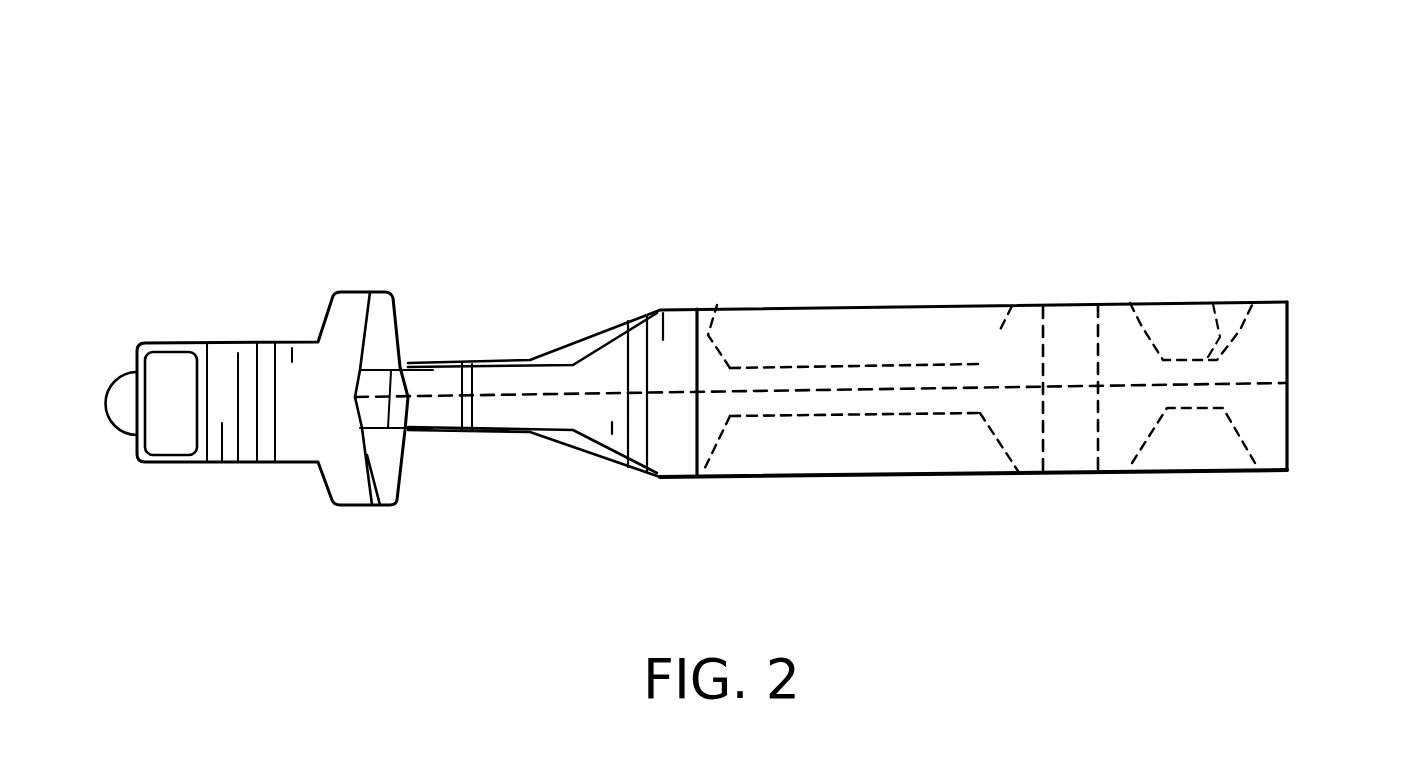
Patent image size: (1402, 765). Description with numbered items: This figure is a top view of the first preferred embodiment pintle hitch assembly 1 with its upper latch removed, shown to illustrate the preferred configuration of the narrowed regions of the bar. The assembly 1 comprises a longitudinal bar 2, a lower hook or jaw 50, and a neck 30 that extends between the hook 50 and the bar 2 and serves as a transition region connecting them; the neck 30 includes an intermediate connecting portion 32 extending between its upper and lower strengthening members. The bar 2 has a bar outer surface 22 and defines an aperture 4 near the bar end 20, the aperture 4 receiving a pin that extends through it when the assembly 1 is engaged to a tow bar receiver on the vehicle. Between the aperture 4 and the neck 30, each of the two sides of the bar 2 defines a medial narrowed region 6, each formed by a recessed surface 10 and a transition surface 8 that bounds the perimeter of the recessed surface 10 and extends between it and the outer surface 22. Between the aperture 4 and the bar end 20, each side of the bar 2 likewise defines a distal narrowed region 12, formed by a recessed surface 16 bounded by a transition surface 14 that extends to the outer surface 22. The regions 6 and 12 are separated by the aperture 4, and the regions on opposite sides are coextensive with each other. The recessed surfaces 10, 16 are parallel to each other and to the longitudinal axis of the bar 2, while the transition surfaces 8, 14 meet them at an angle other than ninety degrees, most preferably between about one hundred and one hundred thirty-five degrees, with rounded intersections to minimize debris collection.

The pintle hitch assembly 1 is at (1191, 126).
The longitudinal bar 2 is at (876, 336).
The aperture 4 is at (1090, 365).
The medial narrowed region 6 is at (860, 390).
The transition surface 8 is at (717, 305).
The recessed surface 10 is at (863, 367).
The distal narrowed region 12 is at (1195, 388).
The transition surface 14 is at (1141, 325).
The recessed surface 16 is at (1213, 304).
The bar end 20 is at (1290, 357).
The bar outer surface 22 is at (1108, 303).
The neck 30 is at (626, 467).
The intermediate connecting portion 32 is at (445, 433).
The lower hook 50 is at (126, 428).